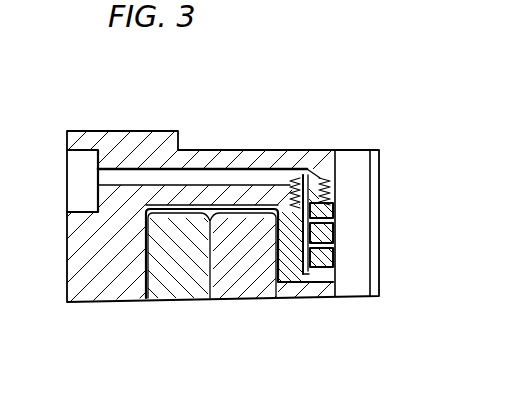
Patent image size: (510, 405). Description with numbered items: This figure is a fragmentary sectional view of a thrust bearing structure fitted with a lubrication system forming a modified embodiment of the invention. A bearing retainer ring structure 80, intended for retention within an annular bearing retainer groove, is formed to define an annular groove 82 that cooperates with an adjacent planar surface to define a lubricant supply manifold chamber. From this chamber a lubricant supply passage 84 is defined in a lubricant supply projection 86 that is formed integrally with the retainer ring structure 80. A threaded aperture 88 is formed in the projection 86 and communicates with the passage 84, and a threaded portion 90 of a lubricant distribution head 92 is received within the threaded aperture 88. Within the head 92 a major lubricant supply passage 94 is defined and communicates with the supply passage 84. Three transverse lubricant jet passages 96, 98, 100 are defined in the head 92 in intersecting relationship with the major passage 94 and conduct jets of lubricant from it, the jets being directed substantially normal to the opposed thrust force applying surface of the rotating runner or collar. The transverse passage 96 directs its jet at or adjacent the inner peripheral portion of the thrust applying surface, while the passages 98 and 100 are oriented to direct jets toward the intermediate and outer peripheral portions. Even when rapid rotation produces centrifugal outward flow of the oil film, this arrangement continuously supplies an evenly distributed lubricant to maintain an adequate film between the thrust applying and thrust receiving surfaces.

The bearing retainer ring structure 80 is at (126, 135).
The annular groove 82 is at (92, 202).
The lubricant supply passage 84 is at (218, 174).
The lubricant supply projection 86 is at (298, 163).
The threaded aperture 88 is at (337, 181).
The threaded portion 90 is at (322, 198).
The lubricant distribution head 92 is at (292, 283).
The major lubricant supply passage 94 is at (305, 278).
The transverse lubricant jet passage 96 is at (335, 272).
The transverse lubricant jet passage 98 is at (335, 248).
The transverse lubricant jet passage 100 is at (335, 220).